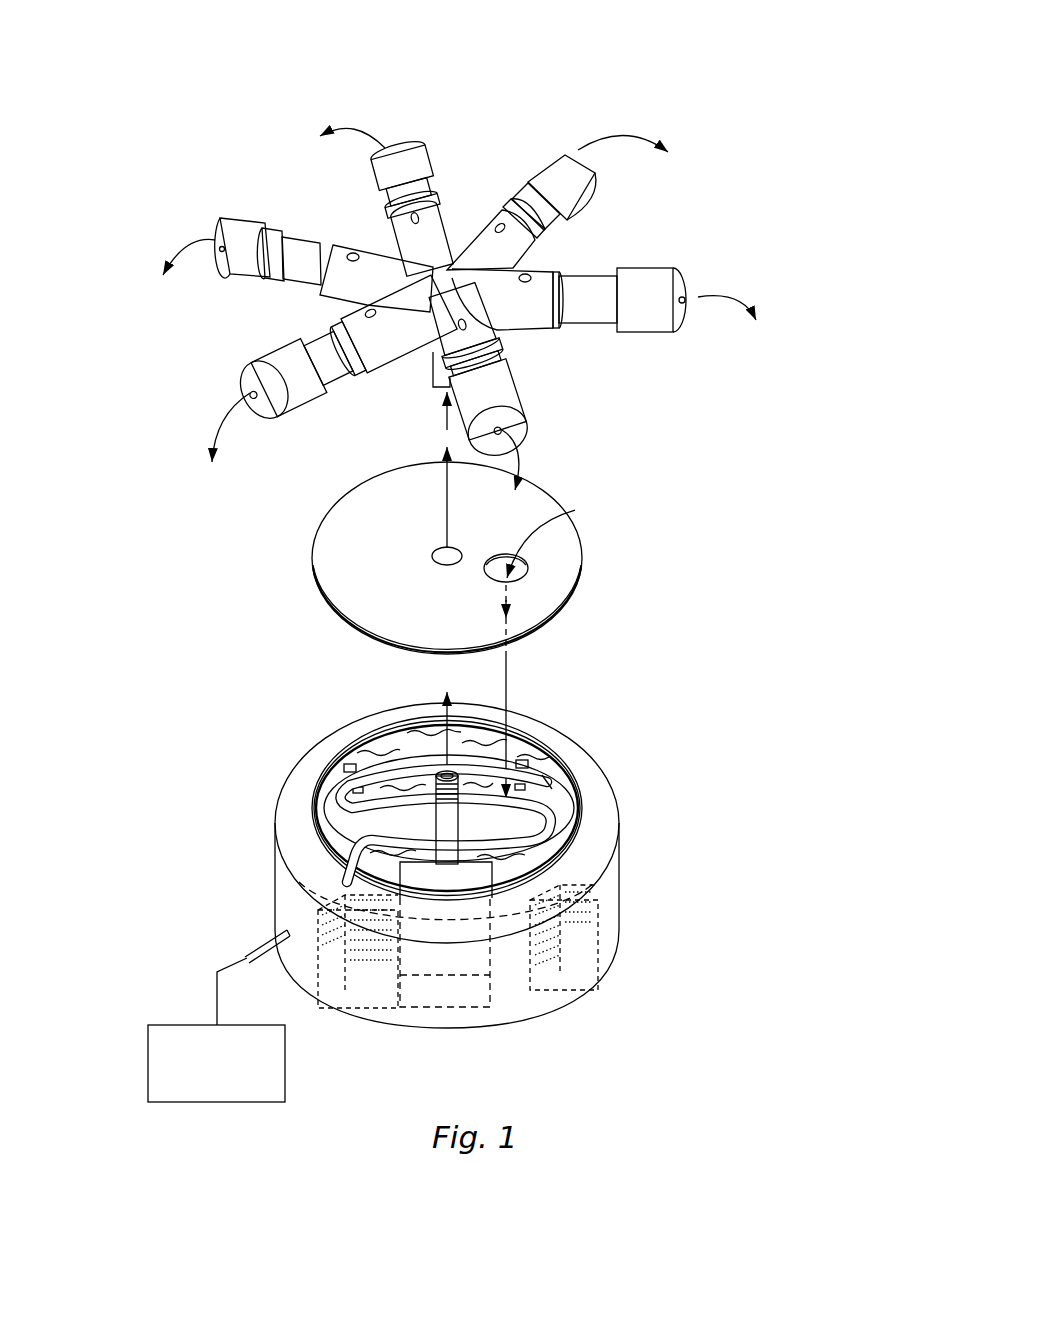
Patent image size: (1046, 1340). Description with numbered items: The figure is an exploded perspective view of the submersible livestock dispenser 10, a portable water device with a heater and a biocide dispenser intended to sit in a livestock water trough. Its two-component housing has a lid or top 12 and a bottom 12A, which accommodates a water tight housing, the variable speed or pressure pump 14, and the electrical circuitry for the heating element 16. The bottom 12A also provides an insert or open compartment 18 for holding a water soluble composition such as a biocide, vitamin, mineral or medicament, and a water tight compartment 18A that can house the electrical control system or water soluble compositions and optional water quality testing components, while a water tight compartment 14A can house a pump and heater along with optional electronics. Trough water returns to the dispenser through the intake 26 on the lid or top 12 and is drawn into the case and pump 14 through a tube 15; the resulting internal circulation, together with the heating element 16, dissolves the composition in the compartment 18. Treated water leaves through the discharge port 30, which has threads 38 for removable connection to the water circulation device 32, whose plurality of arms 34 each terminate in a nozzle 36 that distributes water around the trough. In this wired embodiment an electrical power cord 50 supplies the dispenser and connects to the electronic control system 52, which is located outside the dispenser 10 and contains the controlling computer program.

The submersible livestock dispenser 10 is at (600, 705).
The lid or top 12 is at (546, 488).
The bottom 12A is at (612, 806).
The pump 14 is at (460, 892).
The water tight compartment 14A is at (500, 968).
The tube 15 is at (600, 876).
The heating element 16 is at (549, 777).
The insert or open compartment 18 is at (597, 958).
The water tight compartment 18A is at (355, 985).
The intake 26 is at (592, 523).
The discharge port 30 is at (438, 774).
The water circulation device 32 is at (487, 152).
The arm 34 is at (592, 280).
The nozzle 36 is at (415, 205).
The threads 38 is at (437, 791).
The electrical power cord 50 is at (262, 945).
The electronic control system 52 is at (243, 1102).